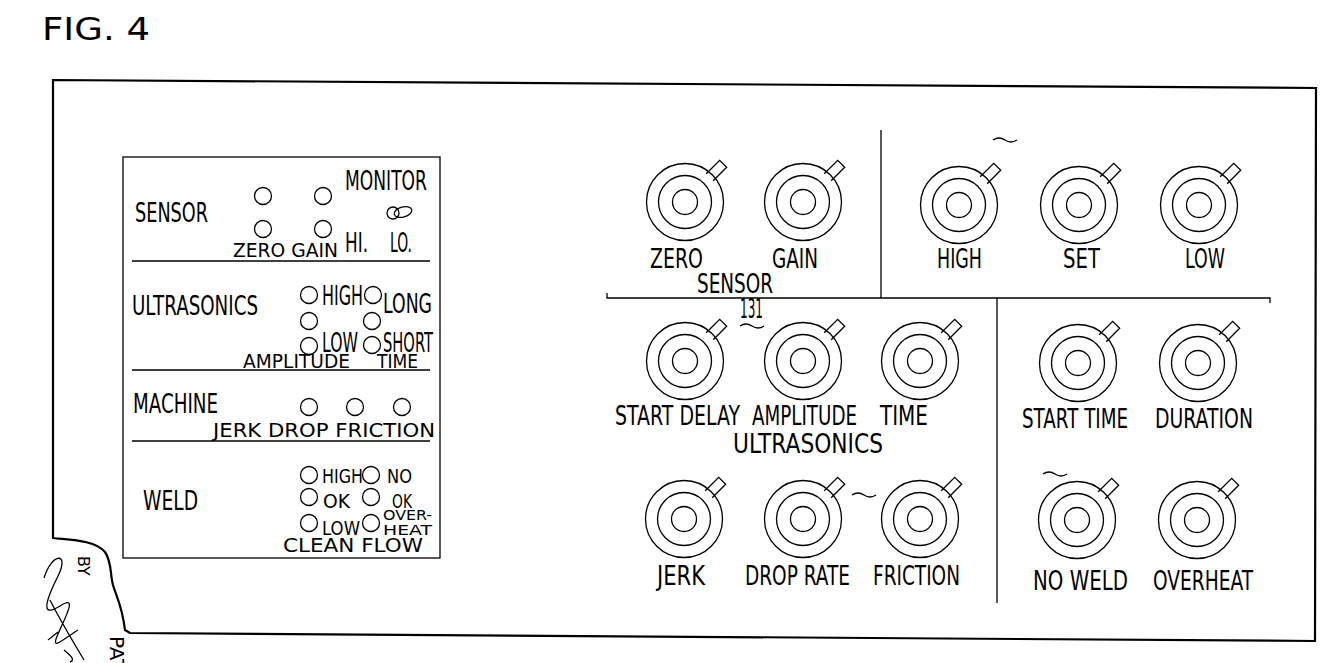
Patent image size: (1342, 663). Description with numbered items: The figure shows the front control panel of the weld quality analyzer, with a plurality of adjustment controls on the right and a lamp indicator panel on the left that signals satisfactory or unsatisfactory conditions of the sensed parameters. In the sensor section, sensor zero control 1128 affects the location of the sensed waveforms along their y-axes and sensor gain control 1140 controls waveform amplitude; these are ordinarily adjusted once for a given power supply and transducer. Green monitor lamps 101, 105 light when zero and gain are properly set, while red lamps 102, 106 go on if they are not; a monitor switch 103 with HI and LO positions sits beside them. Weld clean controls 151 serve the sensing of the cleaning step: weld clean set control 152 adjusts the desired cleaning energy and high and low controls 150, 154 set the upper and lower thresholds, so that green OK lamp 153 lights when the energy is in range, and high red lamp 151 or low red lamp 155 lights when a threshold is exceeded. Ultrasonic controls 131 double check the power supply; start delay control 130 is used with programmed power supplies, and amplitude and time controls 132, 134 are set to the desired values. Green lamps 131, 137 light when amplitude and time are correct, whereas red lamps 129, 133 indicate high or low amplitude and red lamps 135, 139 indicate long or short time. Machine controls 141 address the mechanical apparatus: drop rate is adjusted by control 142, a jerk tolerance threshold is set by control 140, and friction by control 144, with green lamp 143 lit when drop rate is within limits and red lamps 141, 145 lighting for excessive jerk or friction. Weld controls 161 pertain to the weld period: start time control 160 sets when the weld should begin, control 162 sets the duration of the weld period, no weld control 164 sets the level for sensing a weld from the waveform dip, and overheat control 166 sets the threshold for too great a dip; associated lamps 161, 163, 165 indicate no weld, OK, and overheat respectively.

The green monitor lamp 101 is at (257, 189).
The red lamp 102 is at (255, 229).
The monitor hi/lo switch 103 is at (386, 214).
The green monitor lamp 105 is at (318, 189).
The red lamp 106 is at (315, 229).
The red lamp 129 is at (301, 290).
The ultrasonic controls / green lamp 131 is at (301, 321).
The red lamp 133 is at (300, 346).
The red lamp 135 is at (380, 292).
The green lamp 137 is at (380, 319).
The red lamp 139 is at (381, 323).
The machine controls / red lamp 141 is at (302, 403).
The green lamp 143 is at (351, 401).
The red lamp 145 is at (399, 401).
The weld clean controls / high red lamp 151 is at (301, 471).
The weld clean green OK lamp 153 is at (300, 496).
The low red lamp 155 is at (300, 522).
The weld controls / red lamp 161 is at (379, 471).
The green lamp 163 is at (379, 494).
The red lamp 165 is at (379, 520).
The sensor zero control 1128 is at (647, 205).
The sensor gain control 1140 is at (831, 228).
The high control 150 is at (988, 232).
The weld clean set control 152 is at (1108, 232).
The low control 154 is at (1228, 232).
The start delay control 130 is at (648, 368).
The amplitude control 132 is at (767, 370).
The time control 134 is at (884, 370).
The jerk control 140 is at (647, 528).
The drop rate control 142 is at (767, 530).
The friction control 144 is at (884, 530).
The start time control 160 is at (1042, 372).
The duration control 162 is at (1238, 372).
The no weld control 164 is at (1042, 535).
The overheat control 166 is at (1232, 536).